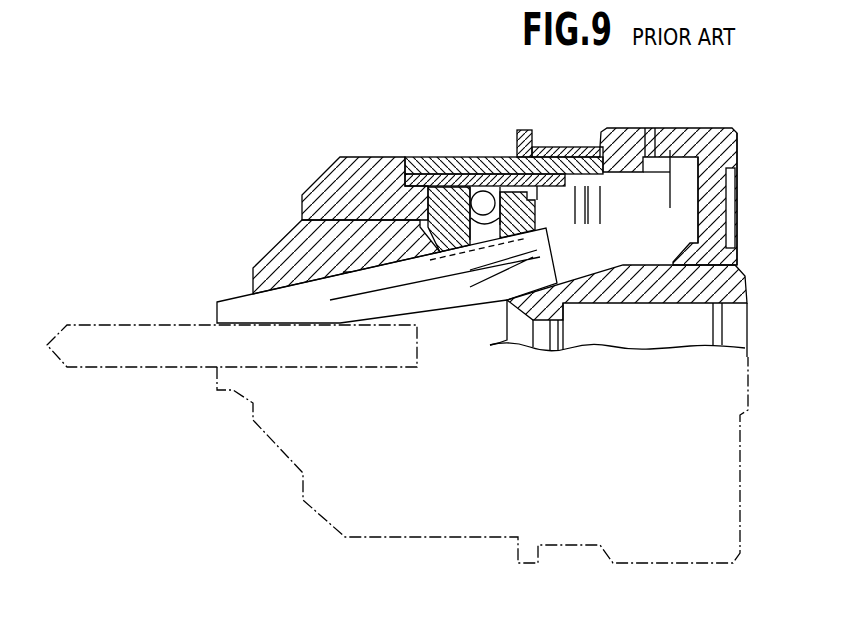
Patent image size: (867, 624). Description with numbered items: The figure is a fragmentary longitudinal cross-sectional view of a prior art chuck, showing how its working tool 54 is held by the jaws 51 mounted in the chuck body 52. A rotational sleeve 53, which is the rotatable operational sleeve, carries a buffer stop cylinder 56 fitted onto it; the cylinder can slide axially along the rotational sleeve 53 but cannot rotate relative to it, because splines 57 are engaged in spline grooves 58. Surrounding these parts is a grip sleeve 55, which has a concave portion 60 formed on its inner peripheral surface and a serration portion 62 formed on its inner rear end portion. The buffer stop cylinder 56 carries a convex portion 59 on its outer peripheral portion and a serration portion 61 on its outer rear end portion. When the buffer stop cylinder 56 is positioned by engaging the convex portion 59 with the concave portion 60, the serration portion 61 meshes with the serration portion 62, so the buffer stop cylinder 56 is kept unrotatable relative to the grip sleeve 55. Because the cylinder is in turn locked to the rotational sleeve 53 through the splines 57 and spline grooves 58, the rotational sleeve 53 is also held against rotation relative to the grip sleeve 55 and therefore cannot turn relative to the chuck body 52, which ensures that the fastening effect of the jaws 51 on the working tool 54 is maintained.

The jaws 51 is at (243, 296).
The chuck body 52 is at (283, 247).
The rotational sleeve 53 is at (323, 170).
The working tool 54 is at (137, 367).
The grip sleeve 55 is at (617, 128).
The buffer stop cylinder 56 is at (527, 130).
The splines 57 is at (510, 150).
The spline grooves 58 is at (393, 157).
The convex portion 59 is at (654, 143).
The concave portion 60 is at (658, 142).
The serration portion 61 is at (660, 175).
The serration portion 62 is at (728, 138).